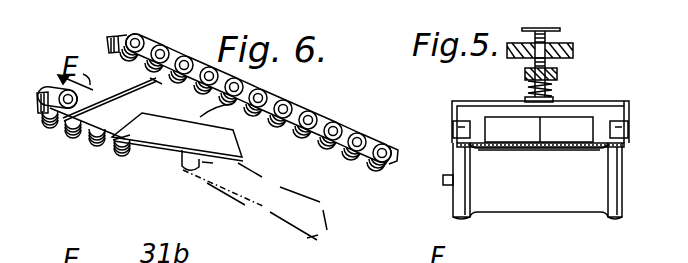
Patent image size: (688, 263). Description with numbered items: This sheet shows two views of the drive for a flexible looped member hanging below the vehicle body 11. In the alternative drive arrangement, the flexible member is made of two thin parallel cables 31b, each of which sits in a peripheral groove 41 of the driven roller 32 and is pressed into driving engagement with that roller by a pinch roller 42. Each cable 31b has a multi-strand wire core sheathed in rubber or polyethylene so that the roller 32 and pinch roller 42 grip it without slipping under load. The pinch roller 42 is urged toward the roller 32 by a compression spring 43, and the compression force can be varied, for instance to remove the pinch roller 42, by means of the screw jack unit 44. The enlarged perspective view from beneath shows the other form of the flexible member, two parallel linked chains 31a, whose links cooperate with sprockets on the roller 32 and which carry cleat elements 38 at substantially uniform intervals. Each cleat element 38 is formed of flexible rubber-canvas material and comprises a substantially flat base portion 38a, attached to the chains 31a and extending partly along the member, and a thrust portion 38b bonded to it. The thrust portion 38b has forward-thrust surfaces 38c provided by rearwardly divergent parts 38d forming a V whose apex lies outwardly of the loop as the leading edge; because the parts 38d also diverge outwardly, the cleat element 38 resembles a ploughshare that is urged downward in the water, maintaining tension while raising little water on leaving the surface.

In FIG. 5, the body 11 is at (555, 52).
In FIG. 6, the linked chains 31a is at (292, 96).
In FIG. 5, the cables 31b is at (457, 143).
In FIG. 5, the roller 32 is at (623, 220).
In FIG. 6, the cleat element 38 is at (88, 141).
In FIG. 5, the cleat element 38 is at (518, 120).
In FIG. 6, the base portion 38a is at (236, 110).
In FIG. 6, the thrust portion 38b is at (157, 135).
In FIG. 6, the forward-thrust surfaces 38c is at (228, 160).
In FIG. 6, the rearwardly divergent parts 38d is at (157, 130).
In FIG. 5, the peripheral groove 41 is at (612, 222).
In FIG. 5, the pinch roller 42 is at (625, 112).
In FIG. 5, the compression spring 43 is at (558, 86).
In FIG. 6, the screw jack unit 44 is at (157, 80).
In FIG. 5, the screw jack unit 44 is at (558, 65).